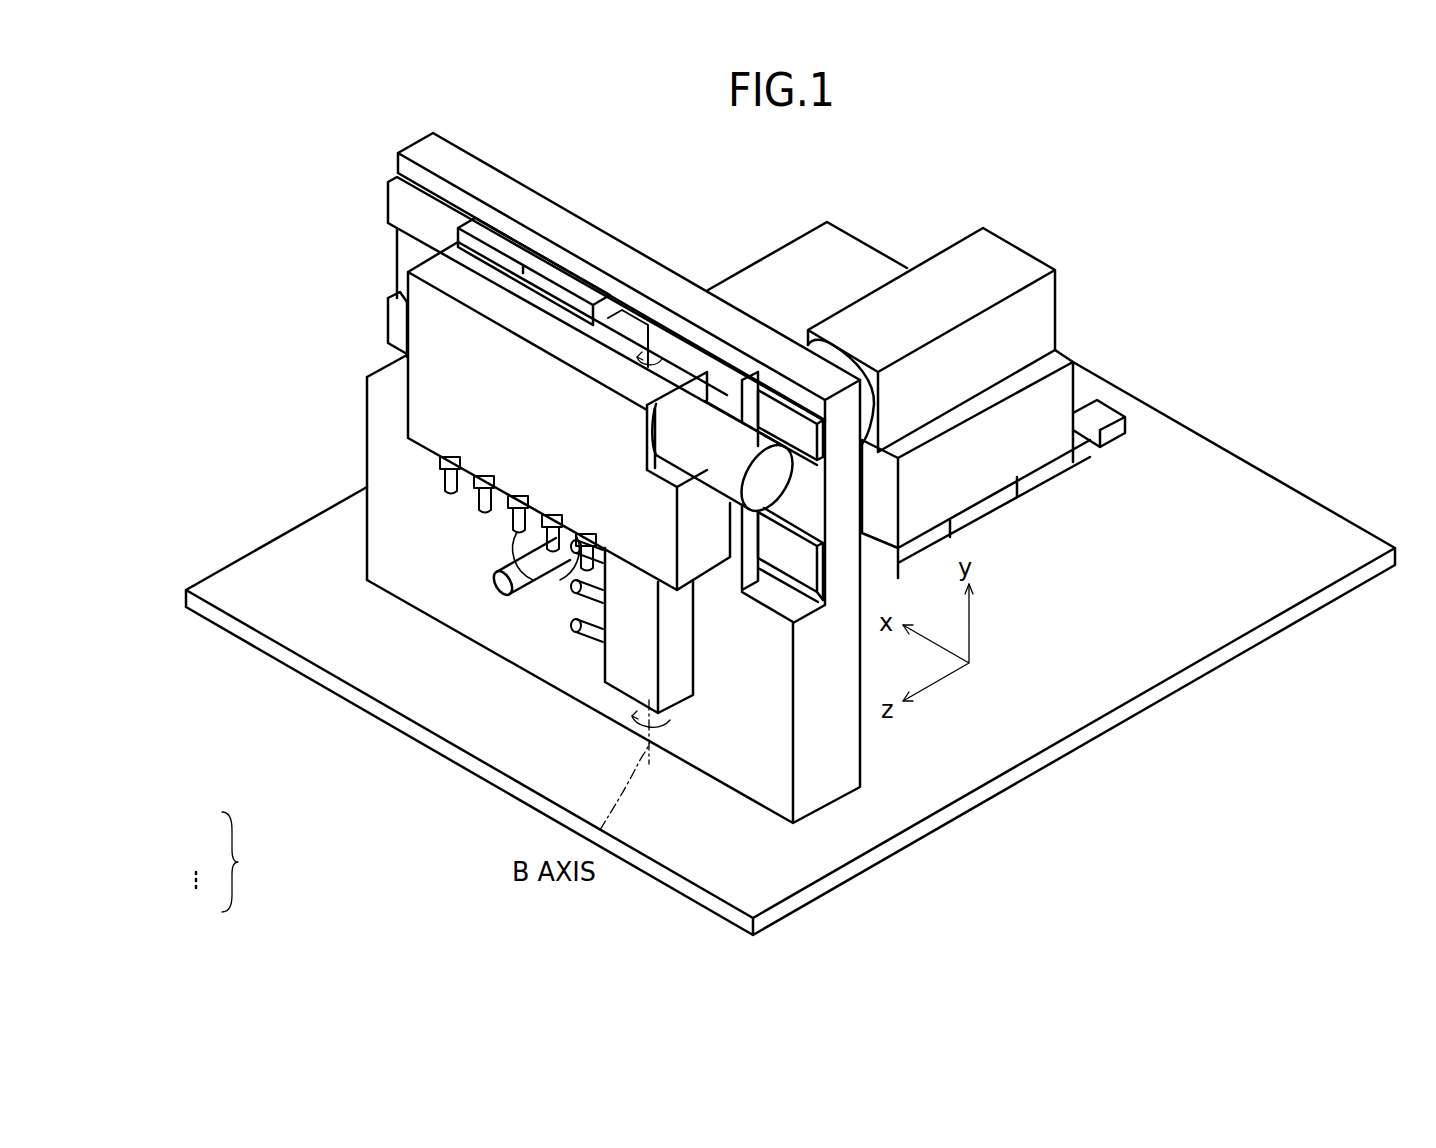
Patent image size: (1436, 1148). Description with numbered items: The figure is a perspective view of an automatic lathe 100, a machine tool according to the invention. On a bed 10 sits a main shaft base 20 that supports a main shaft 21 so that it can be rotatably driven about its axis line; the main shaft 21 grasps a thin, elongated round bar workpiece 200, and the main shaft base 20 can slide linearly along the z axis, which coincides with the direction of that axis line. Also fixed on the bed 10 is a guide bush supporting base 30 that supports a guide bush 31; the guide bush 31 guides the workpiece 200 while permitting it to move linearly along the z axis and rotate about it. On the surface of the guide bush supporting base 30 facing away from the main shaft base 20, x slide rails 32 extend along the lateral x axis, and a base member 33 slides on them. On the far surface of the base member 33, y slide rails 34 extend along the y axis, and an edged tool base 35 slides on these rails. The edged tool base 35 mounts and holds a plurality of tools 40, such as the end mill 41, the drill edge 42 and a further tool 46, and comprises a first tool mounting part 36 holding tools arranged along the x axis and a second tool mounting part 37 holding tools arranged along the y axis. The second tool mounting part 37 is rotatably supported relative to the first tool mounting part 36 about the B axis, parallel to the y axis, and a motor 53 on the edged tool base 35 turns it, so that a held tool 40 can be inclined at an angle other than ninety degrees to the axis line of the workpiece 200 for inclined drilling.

The bed 10 is at (1178, 618).
The main shaft base 20 is at (975, 262).
The main shaft 21 is at (840, 355).
The guide bush supporting base 30 is at (470, 178).
The guide bush 31 is at (553, 590).
The x slide rails 32 is at (403, 330).
The base member 33 is at (493, 237).
The y slide rails 34 is at (503, 260).
The edged tool base 35 is at (448, 357).
The first tool mounting part 36 is at (421, 425).
The second tool mounting part 37 is at (673, 676).
The tools 40 is at (226, 863).
The end mill 41 is at (578, 588).
The drill edge 42 is at (577, 630).
The tool 46 is at (487, 512).
The motor 53 is at (722, 430).
The automatic lathe 100 is at (1157, 237).
The workpiece 200 is at (515, 583).